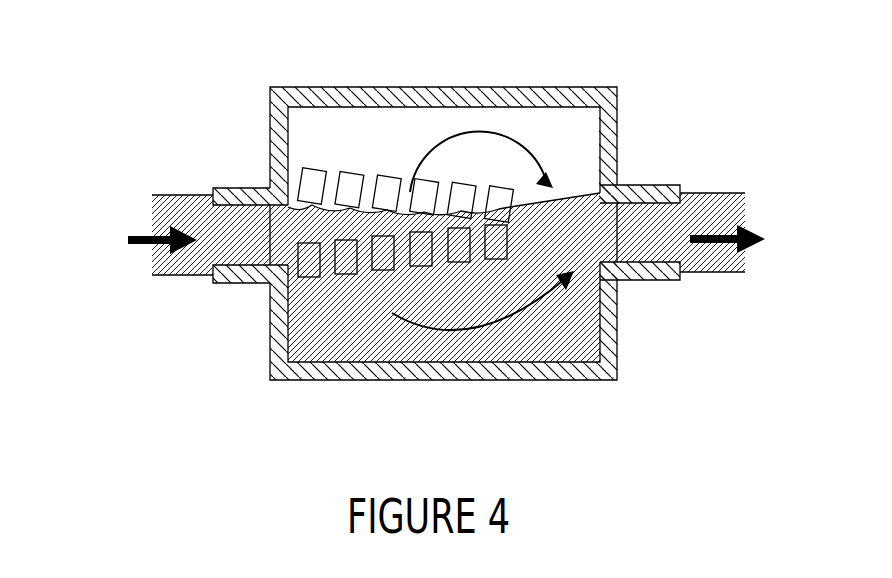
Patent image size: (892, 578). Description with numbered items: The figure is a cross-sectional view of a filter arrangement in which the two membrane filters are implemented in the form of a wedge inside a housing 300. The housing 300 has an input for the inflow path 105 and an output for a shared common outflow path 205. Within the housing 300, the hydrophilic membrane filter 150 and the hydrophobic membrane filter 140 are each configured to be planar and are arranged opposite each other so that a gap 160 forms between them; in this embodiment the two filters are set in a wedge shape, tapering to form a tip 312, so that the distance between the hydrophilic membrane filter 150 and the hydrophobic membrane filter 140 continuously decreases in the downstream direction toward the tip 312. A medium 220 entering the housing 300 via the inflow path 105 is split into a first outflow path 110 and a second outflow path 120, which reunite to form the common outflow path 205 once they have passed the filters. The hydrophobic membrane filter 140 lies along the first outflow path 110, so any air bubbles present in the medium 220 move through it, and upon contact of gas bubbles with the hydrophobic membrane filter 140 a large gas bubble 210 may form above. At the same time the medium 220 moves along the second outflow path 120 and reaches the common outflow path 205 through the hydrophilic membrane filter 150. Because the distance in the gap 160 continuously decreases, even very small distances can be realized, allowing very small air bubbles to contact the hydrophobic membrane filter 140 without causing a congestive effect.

The inflow path 105 is at (137, 196).
The common outflow path 205 is at (717, 225).
The housing 300 is at (312, 87).
The hydrophobic membrane filter 140 is at (384, 176).
The gas bubble 210 is at (435, 125).
The first outflow path 110 is at (495, 137).
The tip 312 is at (522, 206).
The gap 160 is at (359, 278).
The hydrophilic membrane filter 150 is at (460, 290).
The second outflow path 120 is at (508, 282).
The medium 220 is at (580, 323).